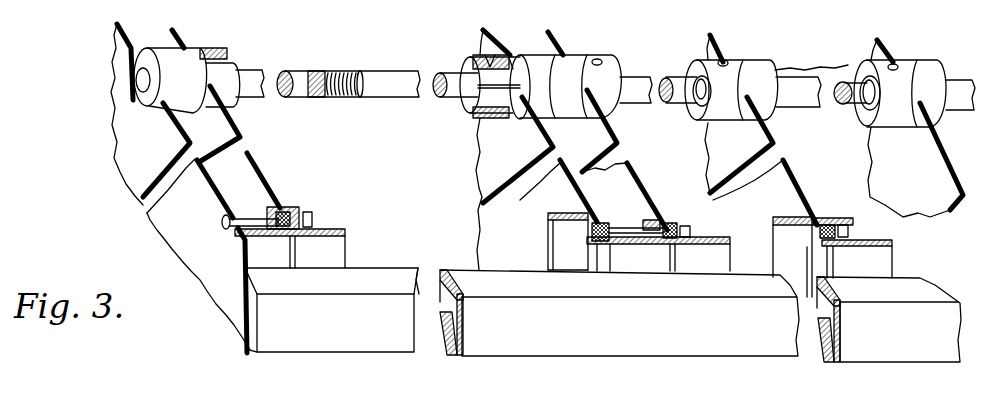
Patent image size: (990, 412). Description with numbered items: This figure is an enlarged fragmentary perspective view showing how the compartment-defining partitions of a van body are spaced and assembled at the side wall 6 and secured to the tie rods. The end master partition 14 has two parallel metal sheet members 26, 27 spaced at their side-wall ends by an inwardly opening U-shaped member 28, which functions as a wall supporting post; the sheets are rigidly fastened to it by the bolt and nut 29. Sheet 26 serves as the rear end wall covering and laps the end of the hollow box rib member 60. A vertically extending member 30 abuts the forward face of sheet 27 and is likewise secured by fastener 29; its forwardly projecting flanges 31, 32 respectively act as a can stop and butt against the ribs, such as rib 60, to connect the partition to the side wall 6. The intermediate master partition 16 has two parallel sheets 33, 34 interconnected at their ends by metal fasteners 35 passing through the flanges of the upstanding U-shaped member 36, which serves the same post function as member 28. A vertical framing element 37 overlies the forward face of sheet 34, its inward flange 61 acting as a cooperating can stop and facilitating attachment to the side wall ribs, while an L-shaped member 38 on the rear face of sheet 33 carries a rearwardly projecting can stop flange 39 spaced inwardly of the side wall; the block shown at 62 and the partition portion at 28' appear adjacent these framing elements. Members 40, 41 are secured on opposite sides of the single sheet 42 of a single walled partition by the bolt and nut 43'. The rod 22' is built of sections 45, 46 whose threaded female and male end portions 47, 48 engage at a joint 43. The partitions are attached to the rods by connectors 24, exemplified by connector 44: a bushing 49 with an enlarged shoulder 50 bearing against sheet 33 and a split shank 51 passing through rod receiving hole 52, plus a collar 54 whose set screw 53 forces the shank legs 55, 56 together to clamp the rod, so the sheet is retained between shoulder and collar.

The side wall 6 is at (400, 353).
The end master partition 14 is at (115, 122).
The intermediate master partition 16 is at (477, 147).
The rod 22' is at (645, 77).
The connectors 24 is at (803, 68).
The metal sheet member 26 is at (150, 227).
The metal sheet member 27 is at (249, 156).
The U-shaped member 28 is at (313, 261).
The side plate 28' is at (727, 117).
The bolt and nut 29 is at (249, 208).
The vertically extending member 30 is at (314, 223).
The flange 31 is at (314, 215).
The flange 32 is at (345, 242).
The sheet 33 is at (553, 145).
The sheet 34 is at (617, 144).
The metal fastener 35 is at (621, 222).
The U-shaped member 36 is at (643, 180).
The end member or framing element 37 is at (698, 227).
The L-shaped member or framing element 38 is at (545, 225).
The flange 39 is at (548, 239).
The member 40 is at (773, 222).
The member 41 is at (860, 230).
The single sheet 42 is at (790, 163).
The joint 43 is at (377, 71).
The bolt and nut 43' is at (799, 270).
The connector 44 is at (570, 55).
The rod section 45 is at (288, 68).
The rod section 46 is at (403, 72).
The female end portion 47 is at (325, 70).
The male end portion 48 is at (343, 72).
The bushing 49 is at (525, 53).
The enlarged shoulder 50 is at (530, 90).
The split shank 51 is at (462, 105).
The rod receiving hole 52 is at (519, 42).
The set screw 53 is at (482, 55).
The collar 54 is at (475, 58).
The leg 55 is at (463, 70).
The leg 56 is at (473, 114).
The hollow box rib member 60 is at (353, 268).
The inward flange 61 is at (690, 223).
The block 62 is at (730, 253).